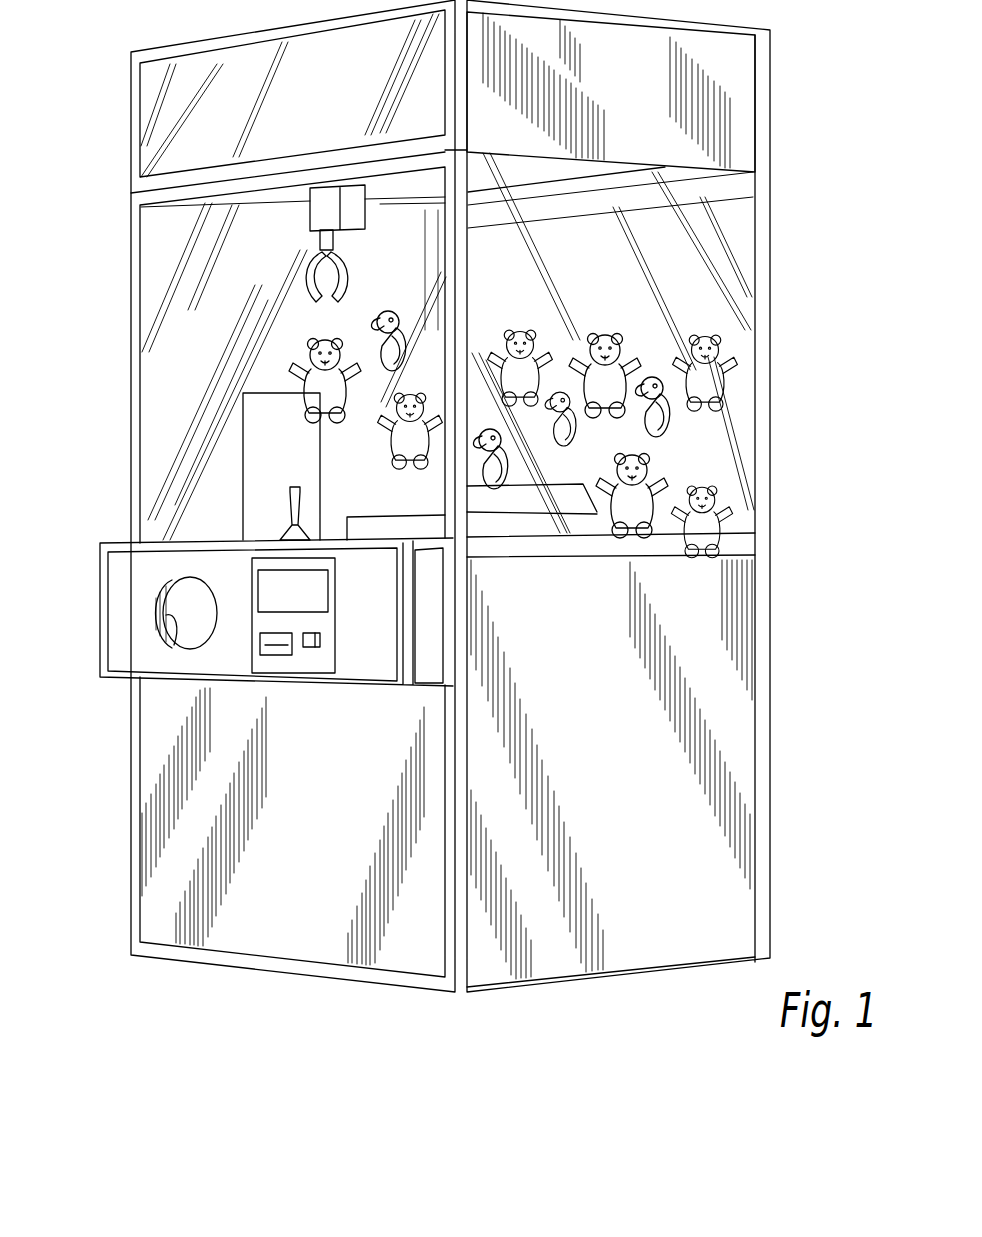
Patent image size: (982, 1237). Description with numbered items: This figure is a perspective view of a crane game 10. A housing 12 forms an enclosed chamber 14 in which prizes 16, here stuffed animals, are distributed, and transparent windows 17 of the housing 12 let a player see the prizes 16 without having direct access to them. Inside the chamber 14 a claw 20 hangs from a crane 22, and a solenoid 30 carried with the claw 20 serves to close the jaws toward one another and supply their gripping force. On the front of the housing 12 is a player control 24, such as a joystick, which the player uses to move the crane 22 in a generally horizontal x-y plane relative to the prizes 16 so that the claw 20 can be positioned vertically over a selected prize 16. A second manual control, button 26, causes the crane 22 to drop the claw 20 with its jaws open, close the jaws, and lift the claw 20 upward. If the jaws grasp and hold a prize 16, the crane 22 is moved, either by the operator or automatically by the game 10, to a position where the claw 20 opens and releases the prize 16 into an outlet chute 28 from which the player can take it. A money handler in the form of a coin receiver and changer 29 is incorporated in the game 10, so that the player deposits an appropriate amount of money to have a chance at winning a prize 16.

The crane game 10 is at (851, 117).
The housing 12 is at (759, 647).
The enclosed chamber 14 is at (183, 380).
The prizes 16 is at (742, 413).
The transparent windows 17 is at (248, 269).
The claw 20 is at (345, 275).
The crane 22 is at (360, 217).
The player control 24 is at (287, 503).
The button 26 is at (296, 487).
The outlet chute 28 is at (177, 650).
The coin receiver and changer 29 is at (298, 662).
The solenoid 30 is at (317, 246).